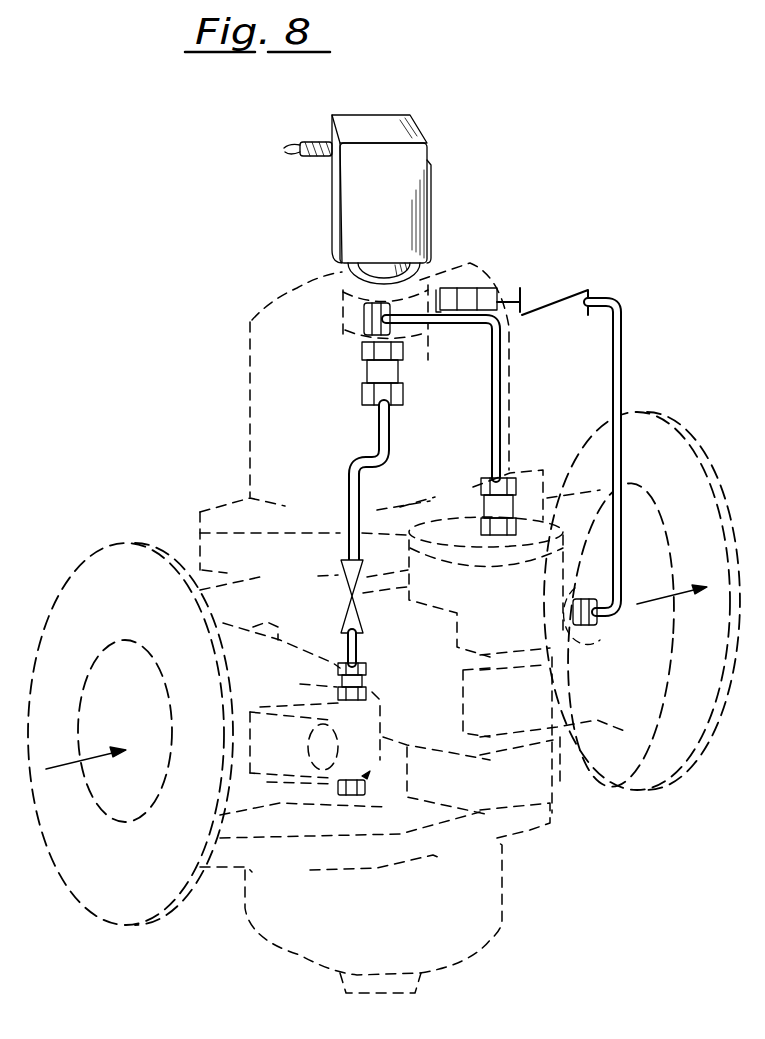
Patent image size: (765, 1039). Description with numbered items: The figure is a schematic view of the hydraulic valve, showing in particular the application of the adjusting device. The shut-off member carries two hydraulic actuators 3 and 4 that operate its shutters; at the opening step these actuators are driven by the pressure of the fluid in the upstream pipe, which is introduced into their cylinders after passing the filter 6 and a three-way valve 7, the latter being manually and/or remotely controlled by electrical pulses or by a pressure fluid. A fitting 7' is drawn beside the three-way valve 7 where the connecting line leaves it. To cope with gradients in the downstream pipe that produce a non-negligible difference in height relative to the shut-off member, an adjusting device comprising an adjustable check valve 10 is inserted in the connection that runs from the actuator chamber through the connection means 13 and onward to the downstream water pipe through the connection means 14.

The hydraulic actuator 3 is at (540, 680).
The hydraulic actuator 4 is at (250, 309).
The filter 6 is at (365, 748).
The three-way valve 7 is at (384, 176).
The union connector 7' is at (473, 251).
The adjustable check valve 10 is at (556, 297).
The connection means 13 is at (500, 386).
The connection means 14 is at (625, 356).